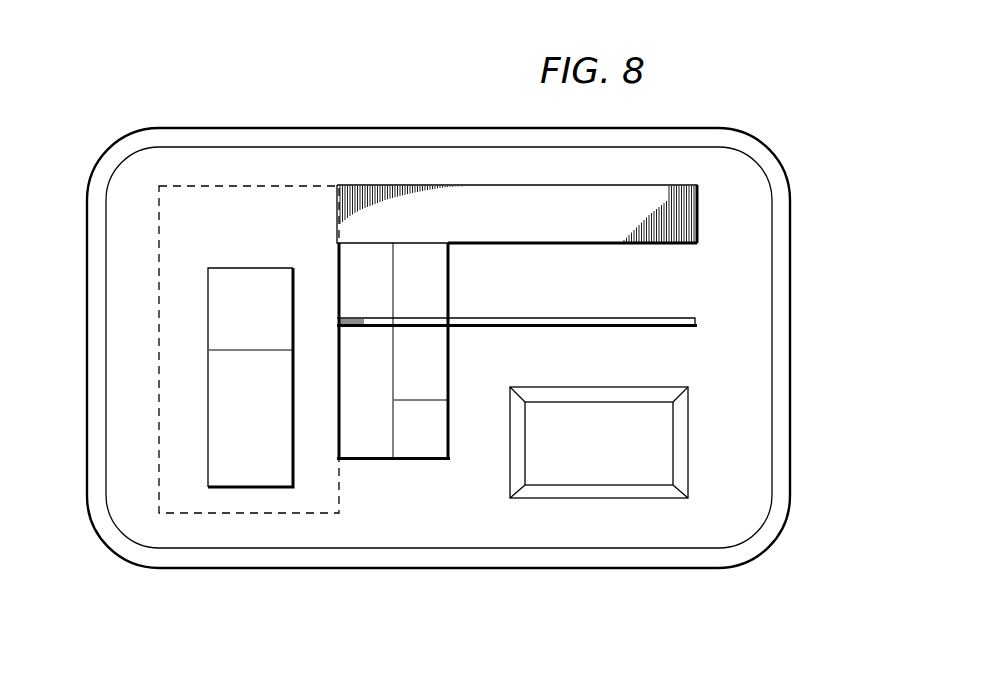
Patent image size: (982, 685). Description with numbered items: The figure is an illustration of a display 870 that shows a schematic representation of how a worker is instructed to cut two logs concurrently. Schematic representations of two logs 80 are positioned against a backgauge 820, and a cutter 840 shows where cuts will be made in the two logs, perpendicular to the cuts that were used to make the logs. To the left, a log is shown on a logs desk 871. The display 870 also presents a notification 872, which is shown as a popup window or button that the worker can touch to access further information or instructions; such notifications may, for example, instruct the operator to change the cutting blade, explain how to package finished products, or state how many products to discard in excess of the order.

The display 870 is at (216, 108).
The logs desk 871 is at (158, 239).
The backgauge 820 is at (474, 208).
The cutter 840 is at (697, 322).
The logs 80 is at (425, 443).
The notification 872 is at (598, 473).